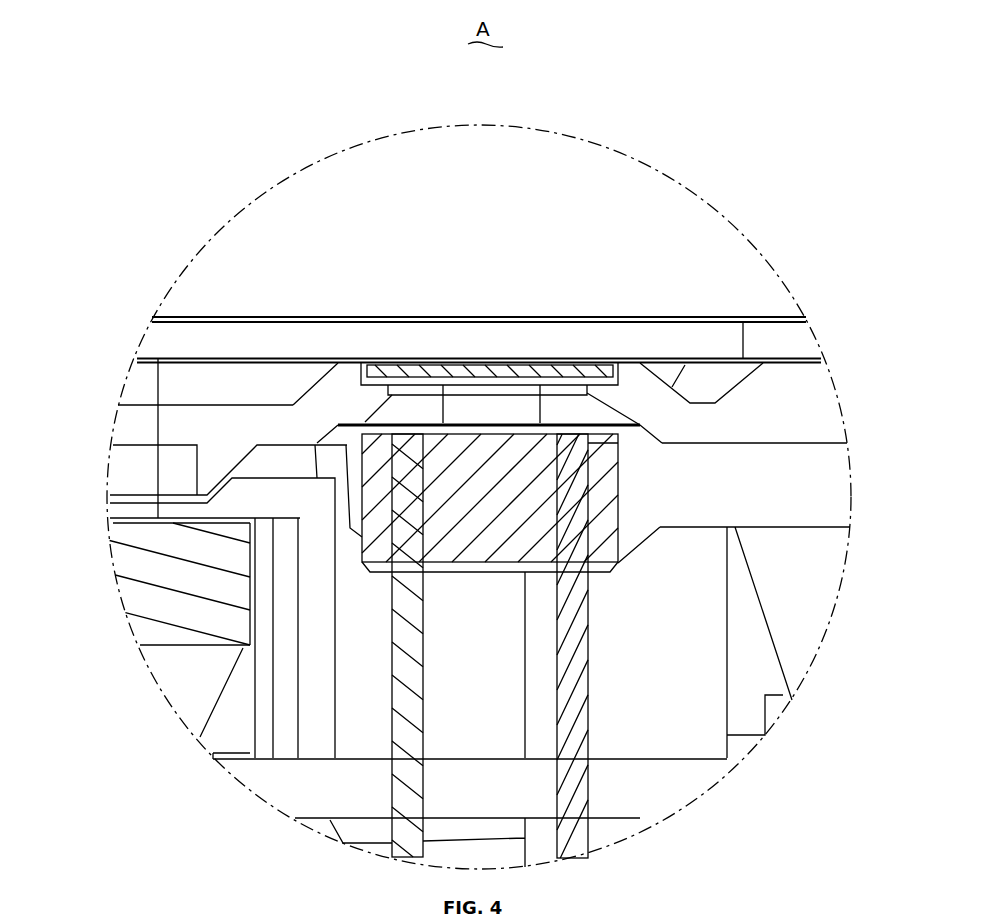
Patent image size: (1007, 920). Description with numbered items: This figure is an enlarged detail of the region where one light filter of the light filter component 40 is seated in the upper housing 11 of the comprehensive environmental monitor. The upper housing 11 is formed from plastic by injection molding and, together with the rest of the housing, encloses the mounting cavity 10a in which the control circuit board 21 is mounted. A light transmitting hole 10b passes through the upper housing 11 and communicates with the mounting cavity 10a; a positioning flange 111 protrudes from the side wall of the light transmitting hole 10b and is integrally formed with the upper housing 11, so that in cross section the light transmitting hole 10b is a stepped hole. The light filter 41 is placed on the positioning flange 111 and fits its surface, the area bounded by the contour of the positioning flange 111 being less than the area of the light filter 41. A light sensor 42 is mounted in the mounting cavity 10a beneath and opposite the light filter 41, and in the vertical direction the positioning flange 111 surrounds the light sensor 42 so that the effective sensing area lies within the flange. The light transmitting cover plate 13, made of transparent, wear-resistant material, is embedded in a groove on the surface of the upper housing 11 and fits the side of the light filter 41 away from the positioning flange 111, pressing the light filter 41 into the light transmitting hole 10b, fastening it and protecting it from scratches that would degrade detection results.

The mounting cavity 10a is at (345, 672).
The light transmitting hole 10b is at (466, 392).
The upper housing 11 is at (238, 441).
The positioning flange 111 is at (385, 392).
The light transmitting cover plate 13 is at (497, 357).
The control circuit board 21 is at (317, 788).
The light filter component 40 is at (647, 625).
The light filter 41 is at (598, 393).
The light sensor 42 is at (500, 523).